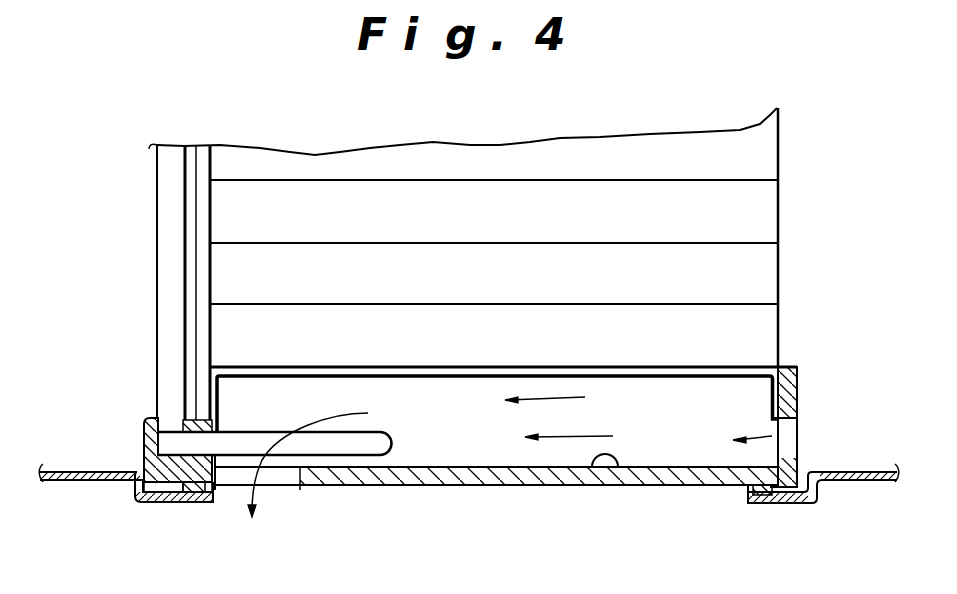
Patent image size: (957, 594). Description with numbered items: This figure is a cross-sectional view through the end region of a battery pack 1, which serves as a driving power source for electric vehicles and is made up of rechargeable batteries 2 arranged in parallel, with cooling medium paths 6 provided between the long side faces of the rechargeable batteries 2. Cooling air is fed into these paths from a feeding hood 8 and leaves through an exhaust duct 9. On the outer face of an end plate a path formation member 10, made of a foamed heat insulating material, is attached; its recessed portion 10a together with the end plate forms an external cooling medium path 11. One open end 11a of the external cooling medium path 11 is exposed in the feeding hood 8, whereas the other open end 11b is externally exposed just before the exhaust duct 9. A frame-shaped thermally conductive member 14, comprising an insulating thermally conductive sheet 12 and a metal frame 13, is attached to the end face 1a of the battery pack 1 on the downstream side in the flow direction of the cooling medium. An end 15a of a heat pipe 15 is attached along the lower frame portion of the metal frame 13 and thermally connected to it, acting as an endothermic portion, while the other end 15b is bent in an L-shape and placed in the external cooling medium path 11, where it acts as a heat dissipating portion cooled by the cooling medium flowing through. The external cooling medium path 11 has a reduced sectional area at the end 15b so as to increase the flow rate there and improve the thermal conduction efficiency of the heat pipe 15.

The battery pack 1 is at (790, 198).
The end face 1a is at (207, 193).
The rechargeable batteries 2 is at (760, 276).
The cooling medium paths 6 is at (660, 304).
The feeding hood 8 is at (846, 480).
The exhaust duct 9 is at (85, 482).
The path formation member 10 is at (490, 487).
The recessed portion 10a is at (613, 467).
The external cooling medium path 11 is at (675, 428).
The open end 11a is at (790, 442).
The other open end 11b is at (301, 468).
The insulating thermally conductive sheet 12 is at (200, 233).
The metal frame 13 is at (193, 298).
The frame-shaped thermally conductive member 14 is at (83, 243).
The heat pipe 15 is at (168, 352).
The end of heat pipe 15a is at (168, 210).
The other end of heat pipe 15b is at (350, 440).